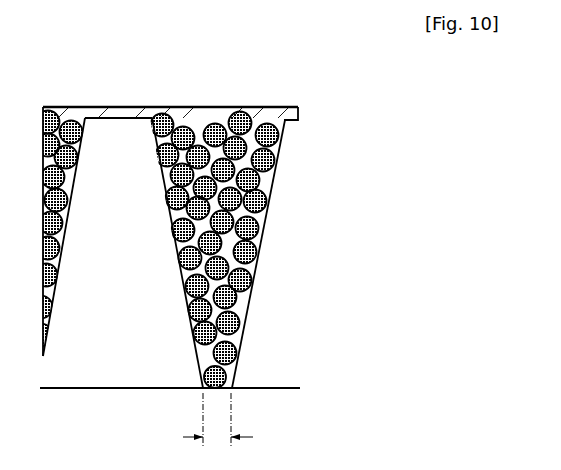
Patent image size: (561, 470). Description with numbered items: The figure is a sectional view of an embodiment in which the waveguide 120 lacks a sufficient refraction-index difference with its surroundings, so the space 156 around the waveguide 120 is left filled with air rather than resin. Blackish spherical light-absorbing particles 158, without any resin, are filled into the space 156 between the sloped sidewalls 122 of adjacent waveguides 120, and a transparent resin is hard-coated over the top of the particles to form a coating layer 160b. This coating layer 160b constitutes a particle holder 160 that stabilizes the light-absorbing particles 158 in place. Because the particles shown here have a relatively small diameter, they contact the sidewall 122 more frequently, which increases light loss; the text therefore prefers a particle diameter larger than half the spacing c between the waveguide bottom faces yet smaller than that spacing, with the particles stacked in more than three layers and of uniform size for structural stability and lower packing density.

The waveguide 120 is at (96, 358).
The sidewall 122 is at (197, 362).
The space 156 is at (167, 183).
The light-absorbing particles 158 is at (268, 194).
The particle holder 160 is at (200, 119).
The coating layer 160b is at (273, 119).